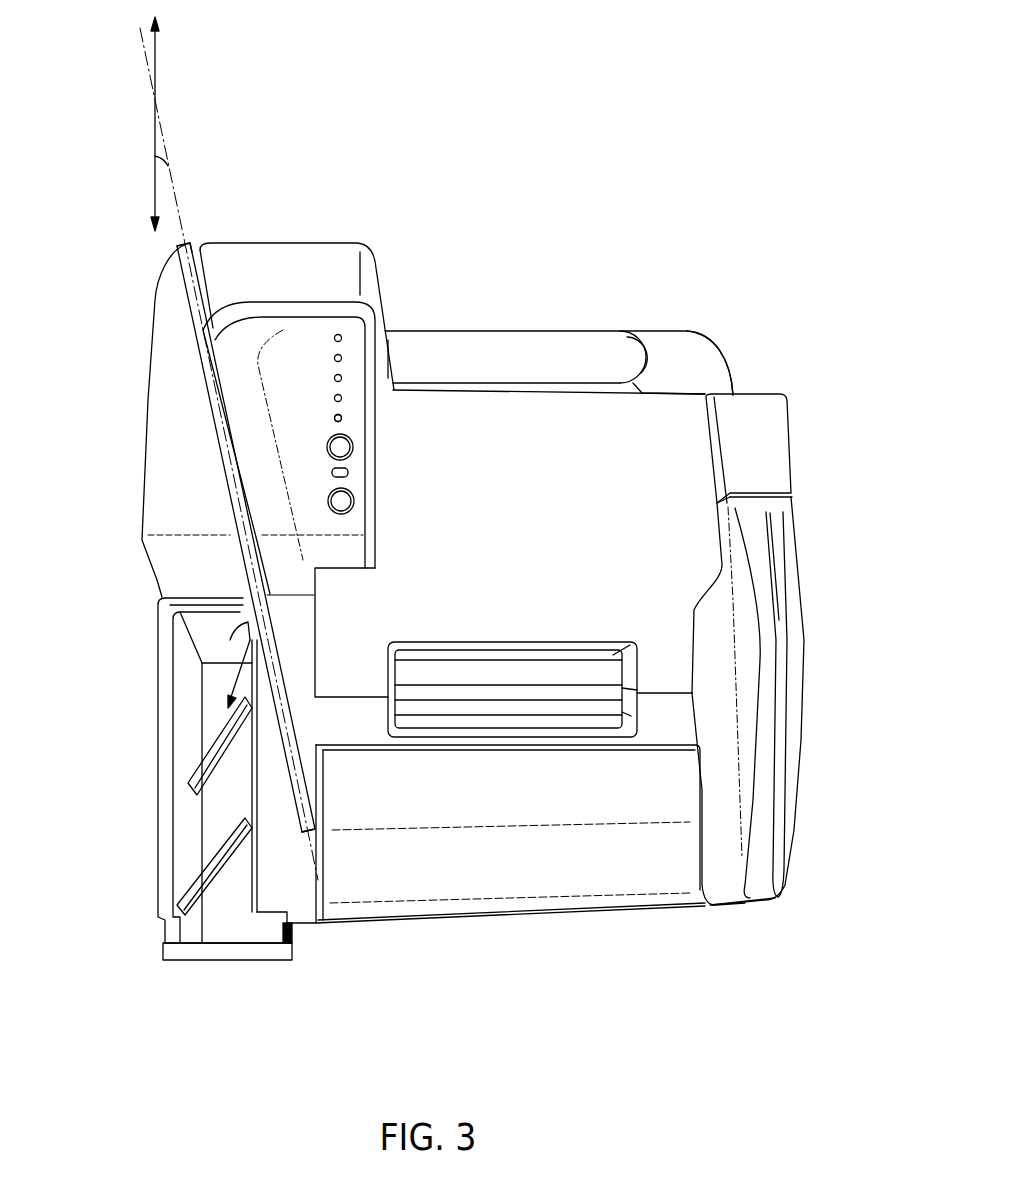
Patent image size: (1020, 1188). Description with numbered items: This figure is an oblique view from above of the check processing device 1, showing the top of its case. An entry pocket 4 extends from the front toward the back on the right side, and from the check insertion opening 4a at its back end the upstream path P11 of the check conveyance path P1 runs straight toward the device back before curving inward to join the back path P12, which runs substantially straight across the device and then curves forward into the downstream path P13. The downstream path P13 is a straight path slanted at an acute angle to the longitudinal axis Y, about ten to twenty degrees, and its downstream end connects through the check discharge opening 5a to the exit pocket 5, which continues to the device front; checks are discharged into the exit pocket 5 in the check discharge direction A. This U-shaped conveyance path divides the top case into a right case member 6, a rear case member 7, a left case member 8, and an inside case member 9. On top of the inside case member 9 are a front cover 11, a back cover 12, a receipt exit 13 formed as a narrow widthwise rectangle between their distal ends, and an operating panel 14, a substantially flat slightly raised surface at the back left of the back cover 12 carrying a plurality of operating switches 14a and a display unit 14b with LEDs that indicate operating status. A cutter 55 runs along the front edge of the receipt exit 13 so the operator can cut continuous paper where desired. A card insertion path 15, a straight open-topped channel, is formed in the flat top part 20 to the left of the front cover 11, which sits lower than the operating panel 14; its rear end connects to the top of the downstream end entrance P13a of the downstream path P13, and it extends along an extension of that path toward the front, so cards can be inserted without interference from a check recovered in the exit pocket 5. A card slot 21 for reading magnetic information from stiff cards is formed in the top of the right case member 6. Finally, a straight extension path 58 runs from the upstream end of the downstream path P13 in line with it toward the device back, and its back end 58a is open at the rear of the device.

The check processing device 1 is at (731, 237).
The entry pocket 4 is at (712, 778).
The check insertion opening 4a is at (712, 613).
The exit pocket 5 is at (211, 727).
The check discharge opening 5a is at (225, 648).
The right case member 6 is at (806, 749).
The rear case member 7 is at (549, 328).
The left case member 8 is at (157, 668).
The inside case member 9 is at (610, 490).
The front cover 11 is at (562, 797).
The back cover 12 is at (562, 570).
The receipt exit 13 is at (460, 690).
The operating panel 14 is at (302, 400).
The operating switches 14a is at (352, 450).
The display unit 14b is at (343, 419).
The card insertion path 15 is at (288, 772).
The top part 20 is at (280, 893).
The card slot 21 is at (783, 646).
The cutter 55 is at (518, 700).
The extension path 58 is at (219, 277).
The back end 58a is at (192, 249).
The check discharge direction A is at (212, 677).
The check conveyance path P1 is at (607, 386).
The upstream path P11 is at (718, 470).
The back path P12 is at (508, 382).
The downstream path P13 is at (222, 433).
The downstream end entrance P13a is at (240, 575).
The longitudinal axis Y is at (158, 47).